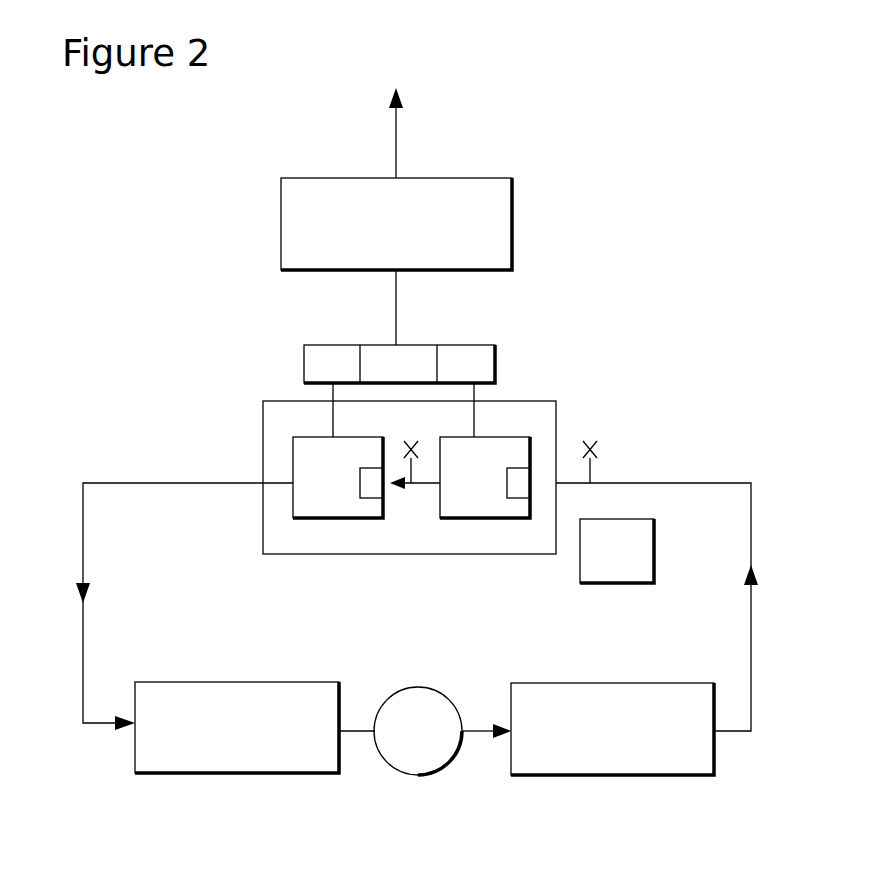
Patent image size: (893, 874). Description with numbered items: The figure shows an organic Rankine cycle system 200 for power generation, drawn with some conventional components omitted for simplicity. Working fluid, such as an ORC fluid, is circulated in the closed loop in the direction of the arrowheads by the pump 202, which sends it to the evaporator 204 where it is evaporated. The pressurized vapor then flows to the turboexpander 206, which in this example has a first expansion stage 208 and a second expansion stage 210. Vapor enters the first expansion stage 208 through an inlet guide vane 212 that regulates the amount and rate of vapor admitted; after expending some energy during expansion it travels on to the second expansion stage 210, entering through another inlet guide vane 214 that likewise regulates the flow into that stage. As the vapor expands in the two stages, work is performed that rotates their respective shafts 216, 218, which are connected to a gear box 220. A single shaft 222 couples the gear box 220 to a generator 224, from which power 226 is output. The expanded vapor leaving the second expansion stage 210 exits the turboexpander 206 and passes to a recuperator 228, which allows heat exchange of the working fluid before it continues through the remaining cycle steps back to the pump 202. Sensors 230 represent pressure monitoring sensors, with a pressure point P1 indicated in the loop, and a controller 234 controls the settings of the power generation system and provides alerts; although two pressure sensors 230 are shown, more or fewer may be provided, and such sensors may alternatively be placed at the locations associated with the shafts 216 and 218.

The system 200 is at (86, 346).
The pump 202 is at (408, 775).
The evaporator 204 is at (611, 775).
The turboexpander 206 is at (425, 554).
The first expansion stage 208 is at (517, 437).
The second expansion stage 210 is at (293, 500).
The inlet guide vane 212 is at (517, 467).
The inlet guide vane 214 is at (370, 498).
The shaft 216 is at (475, 396).
The shaft 218 is at (333, 394).
The gear box 220 is at (477, 345).
The single shaft 222 is at (397, 318).
The generator 224 is at (512, 234).
The power 226 is at (396, 141).
The recuperator 228 is at (237, 773).
The sensors 230 is at (411, 438).
The controller 234 is at (612, 583).
The pressure point P1 is at (751, 512).